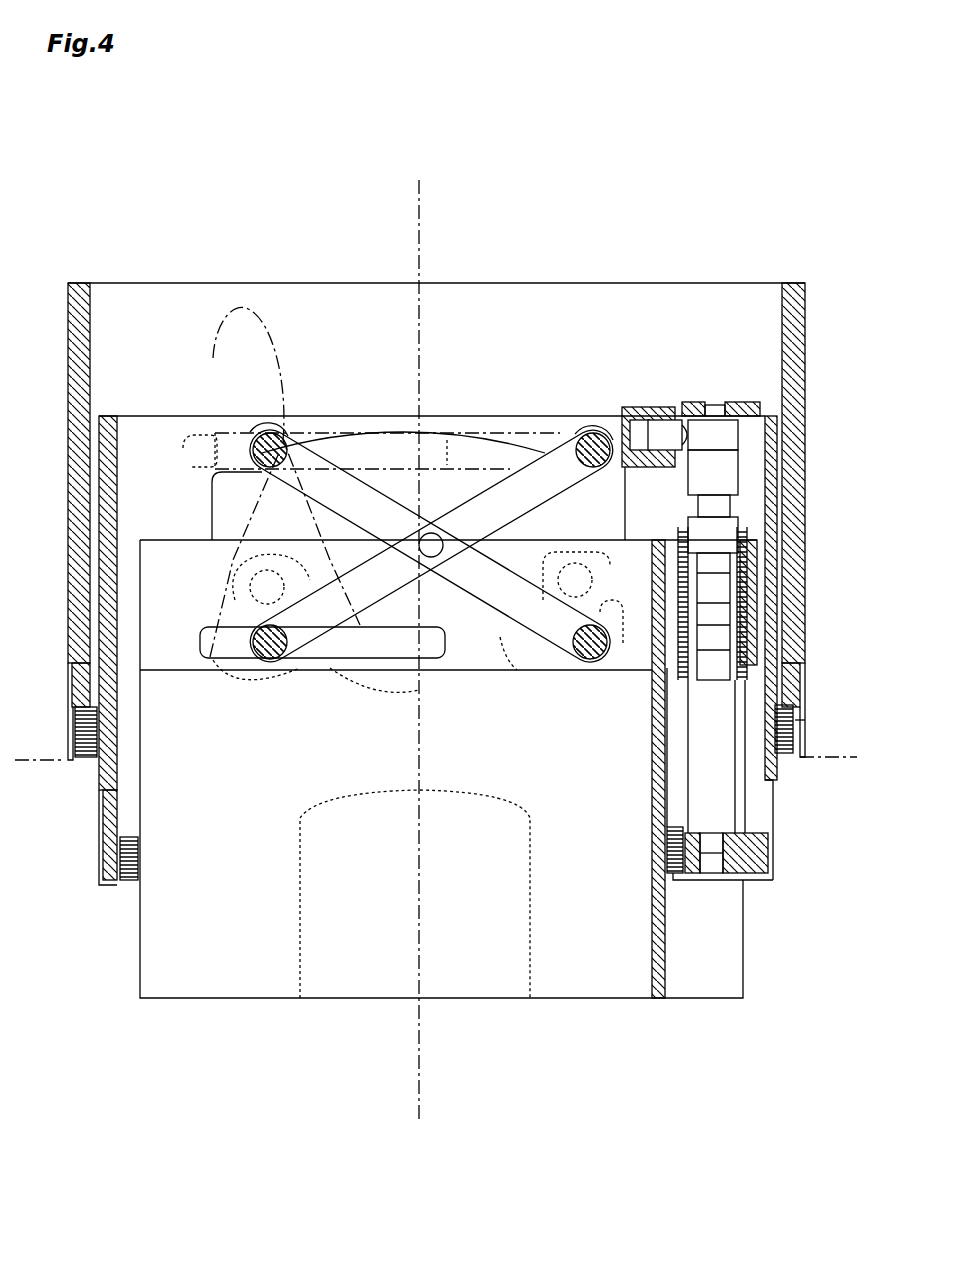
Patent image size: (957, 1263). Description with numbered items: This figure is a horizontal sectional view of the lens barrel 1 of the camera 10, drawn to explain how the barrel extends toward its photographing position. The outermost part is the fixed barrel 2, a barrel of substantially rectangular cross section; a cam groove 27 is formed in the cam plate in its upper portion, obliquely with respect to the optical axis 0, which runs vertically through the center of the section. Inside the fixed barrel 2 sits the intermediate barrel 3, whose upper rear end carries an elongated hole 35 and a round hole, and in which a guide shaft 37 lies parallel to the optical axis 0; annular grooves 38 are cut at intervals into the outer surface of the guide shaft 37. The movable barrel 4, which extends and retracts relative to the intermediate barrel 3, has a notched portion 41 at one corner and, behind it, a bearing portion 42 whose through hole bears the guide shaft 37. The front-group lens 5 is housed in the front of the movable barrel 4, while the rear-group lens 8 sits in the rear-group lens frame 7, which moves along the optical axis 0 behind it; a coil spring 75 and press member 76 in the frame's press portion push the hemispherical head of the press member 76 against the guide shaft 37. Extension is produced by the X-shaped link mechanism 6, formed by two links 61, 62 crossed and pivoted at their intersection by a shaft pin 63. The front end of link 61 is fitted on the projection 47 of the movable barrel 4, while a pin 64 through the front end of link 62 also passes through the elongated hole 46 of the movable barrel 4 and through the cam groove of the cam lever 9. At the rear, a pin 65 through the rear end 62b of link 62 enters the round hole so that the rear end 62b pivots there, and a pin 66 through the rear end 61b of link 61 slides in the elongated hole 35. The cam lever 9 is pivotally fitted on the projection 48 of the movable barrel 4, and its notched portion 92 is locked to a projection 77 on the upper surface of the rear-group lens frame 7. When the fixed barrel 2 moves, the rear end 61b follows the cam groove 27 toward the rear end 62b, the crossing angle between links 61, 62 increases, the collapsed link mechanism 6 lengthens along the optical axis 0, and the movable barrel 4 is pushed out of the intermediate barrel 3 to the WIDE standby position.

The optical axis 0 is at (419, 1060).
The lens barrel 1 is at (71, 274).
The fixed barrel 2 is at (68, 500).
The intermediate barrel 3 is at (99, 612).
The movable barrel 4 is at (140, 797).
The front-group lens 5 is at (530, 872).
The link mechanism 6 is at (431, 538).
The rear-group lens frame 7 is at (212, 500).
The rear-group lens 8 is at (460, 440).
The cam lever 9 is at (517, 650).
The camera 10 is at (822, 760).
The cam groove 27 is at (213, 358).
The elongated hole 35 is at (207, 450).
The guide shaft 37 is at (745, 522).
The grooves 38 is at (730, 440).
The notched portion 41 is at (797, 717).
The bearing portion 42 is at (760, 598).
The elongated hole 46 is at (215, 658).
The projection 47 is at (586, 660).
The projection 48 is at (215, 575).
The link 61 is at (340, 447).
The rear end 61b is at (285, 435).
The link 62 is at (560, 445).
The rear end 62b is at (553, 428).
The shaft pin 63 is at (438, 557).
The pin 64 is at (282, 659).
The pin 65 is at (595, 432).
The pin 66 is at (255, 437).
The coil spring 75 is at (643, 418).
The press member 76 is at (688, 418).
The projection 77 is at (608, 569).
The notched portion 92 is at (621, 650).